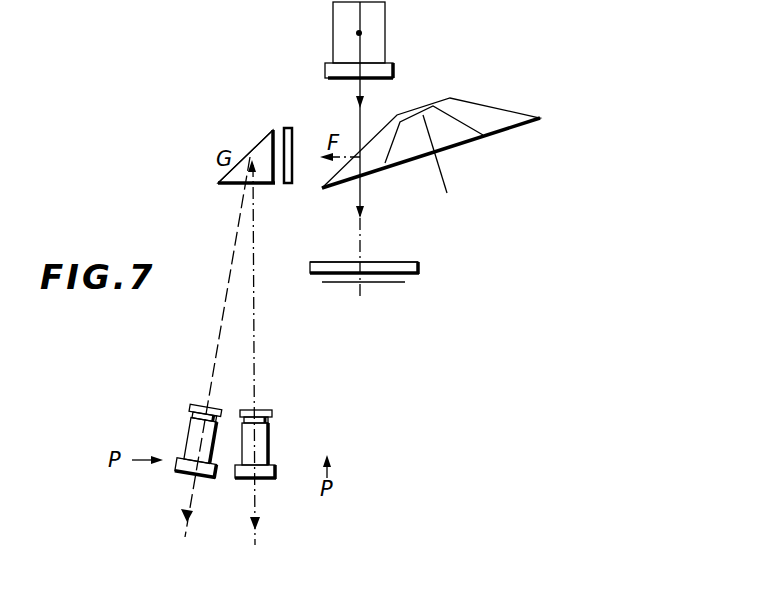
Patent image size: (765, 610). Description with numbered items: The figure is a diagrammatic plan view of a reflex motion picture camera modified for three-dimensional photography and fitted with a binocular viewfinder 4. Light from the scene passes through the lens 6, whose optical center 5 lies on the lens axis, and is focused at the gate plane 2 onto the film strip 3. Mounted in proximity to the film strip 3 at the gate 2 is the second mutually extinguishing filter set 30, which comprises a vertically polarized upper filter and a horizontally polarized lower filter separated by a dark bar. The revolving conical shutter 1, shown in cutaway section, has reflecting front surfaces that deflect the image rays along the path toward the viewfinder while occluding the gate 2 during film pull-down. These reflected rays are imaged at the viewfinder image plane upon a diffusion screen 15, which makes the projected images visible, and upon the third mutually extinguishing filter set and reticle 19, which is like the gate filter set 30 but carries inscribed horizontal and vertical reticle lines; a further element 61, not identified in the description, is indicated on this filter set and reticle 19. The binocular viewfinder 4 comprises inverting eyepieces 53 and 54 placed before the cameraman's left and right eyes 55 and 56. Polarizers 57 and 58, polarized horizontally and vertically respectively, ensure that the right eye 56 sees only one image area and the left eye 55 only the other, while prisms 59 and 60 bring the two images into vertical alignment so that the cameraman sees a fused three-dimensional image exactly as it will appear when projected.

The conical shutter element 1 is at (502, 109).
The gate plane 2 is at (418, 267).
The film strip 3 is at (397, 282).
The second mutually extinguishing filter set 30 is at (407, 262).
The binocular viewfinder 4 is at (247, 379).
The optical center of the lens 5 is at (359, 33).
The lens 6 is at (385, 38).
The diffusion screen 15 is at (293, 142).
The third mutually extinguishing filter set and reticle 19 is at (282, 128).
The binocular inverting eyepiece 53 is at (180, 433).
The binocular inverting eyepiece 54 is at (268, 433).
The left eye 55 is at (183, 523).
The right eye 56 is at (262, 522).
The polarizer 57 is at (175, 482).
The polarizer 58 is at (275, 472).
The prism 59 is at (198, 392).
The prism 60 is at (272, 410).
The beam splitting surface 61 is at (258, 142).